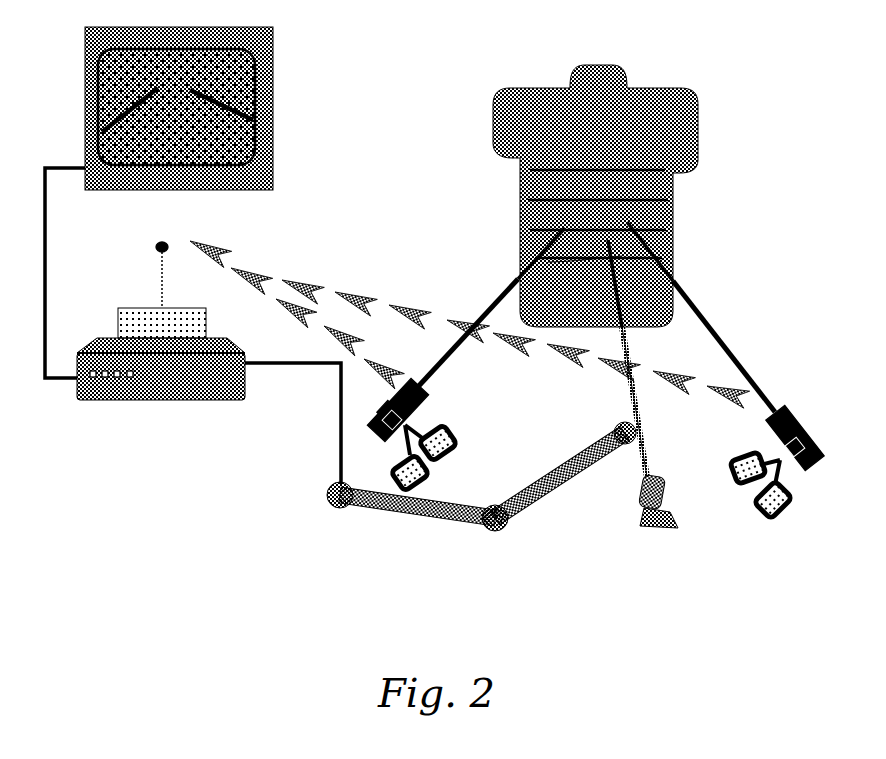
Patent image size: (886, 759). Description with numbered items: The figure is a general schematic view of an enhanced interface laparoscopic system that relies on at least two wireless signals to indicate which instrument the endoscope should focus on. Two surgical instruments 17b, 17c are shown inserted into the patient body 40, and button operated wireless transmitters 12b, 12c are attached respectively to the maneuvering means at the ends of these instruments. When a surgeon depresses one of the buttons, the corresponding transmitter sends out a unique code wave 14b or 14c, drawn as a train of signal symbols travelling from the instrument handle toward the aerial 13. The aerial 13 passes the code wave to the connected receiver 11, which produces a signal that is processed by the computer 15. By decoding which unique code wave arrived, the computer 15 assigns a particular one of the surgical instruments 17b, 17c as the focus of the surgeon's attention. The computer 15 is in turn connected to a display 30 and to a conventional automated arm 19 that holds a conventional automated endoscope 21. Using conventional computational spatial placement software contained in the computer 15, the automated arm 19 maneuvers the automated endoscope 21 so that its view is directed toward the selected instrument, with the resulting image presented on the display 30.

The receiver 11 is at (117, 322).
The aerial 13 is at (157, 270).
The computer 15 is at (160, 400).
The display monitor 30 is at (273, 113).
The unique code wave 14b is at (313, 282).
The unique code wave 14c is at (497, 337).
The surgical instrument 17b is at (490, 297).
The surgical instrument 17c is at (713, 327).
The button operated wireless transmitter 12b is at (372, 425).
The button operated wireless transmitter 12c is at (777, 437).
The automated arm 19 is at (548, 477).
The automated endoscope 21 is at (560, 262).
The patient body 40 is at (675, 198).